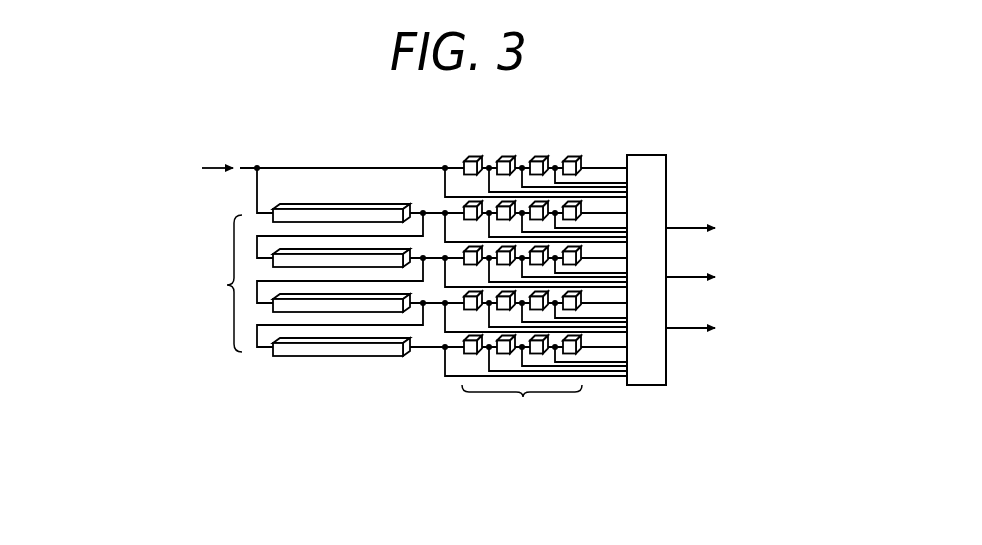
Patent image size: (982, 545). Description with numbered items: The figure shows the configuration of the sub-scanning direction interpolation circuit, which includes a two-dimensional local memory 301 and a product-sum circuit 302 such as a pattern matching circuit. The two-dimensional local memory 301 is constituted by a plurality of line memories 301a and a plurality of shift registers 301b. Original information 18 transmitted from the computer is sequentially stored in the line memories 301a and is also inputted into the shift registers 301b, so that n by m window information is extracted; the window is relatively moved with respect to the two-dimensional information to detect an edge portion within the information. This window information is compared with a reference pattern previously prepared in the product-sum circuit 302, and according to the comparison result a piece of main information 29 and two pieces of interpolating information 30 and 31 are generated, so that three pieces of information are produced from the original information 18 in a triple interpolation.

The original information 18 is at (244, 169).
The main information 29 is at (771, 229).
The interpolating information 30 is at (771, 278).
The interpolating information 31 is at (771, 328).
The two-dimensional local memory 301 is at (402, 296).
The line memories 301a is at (377, 205).
The shift registers 301b is at (544, 158).
The product-sum circuit 302 is at (646, 156).